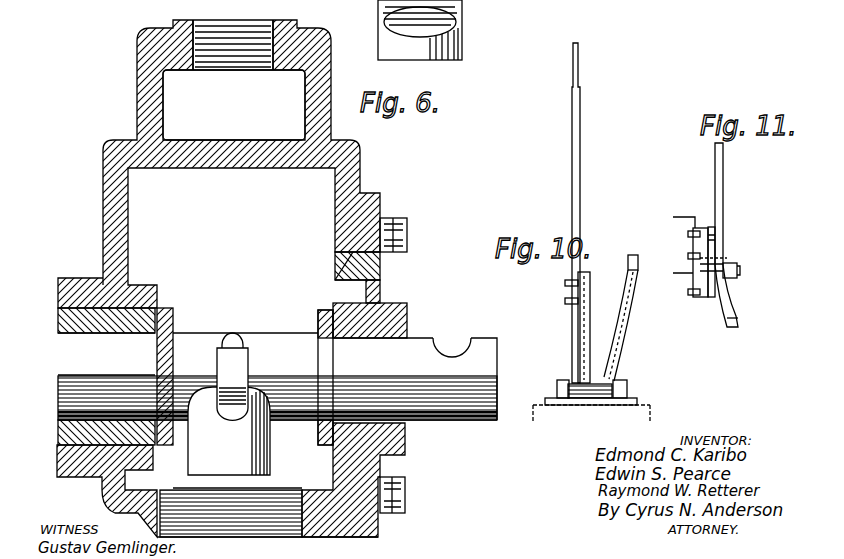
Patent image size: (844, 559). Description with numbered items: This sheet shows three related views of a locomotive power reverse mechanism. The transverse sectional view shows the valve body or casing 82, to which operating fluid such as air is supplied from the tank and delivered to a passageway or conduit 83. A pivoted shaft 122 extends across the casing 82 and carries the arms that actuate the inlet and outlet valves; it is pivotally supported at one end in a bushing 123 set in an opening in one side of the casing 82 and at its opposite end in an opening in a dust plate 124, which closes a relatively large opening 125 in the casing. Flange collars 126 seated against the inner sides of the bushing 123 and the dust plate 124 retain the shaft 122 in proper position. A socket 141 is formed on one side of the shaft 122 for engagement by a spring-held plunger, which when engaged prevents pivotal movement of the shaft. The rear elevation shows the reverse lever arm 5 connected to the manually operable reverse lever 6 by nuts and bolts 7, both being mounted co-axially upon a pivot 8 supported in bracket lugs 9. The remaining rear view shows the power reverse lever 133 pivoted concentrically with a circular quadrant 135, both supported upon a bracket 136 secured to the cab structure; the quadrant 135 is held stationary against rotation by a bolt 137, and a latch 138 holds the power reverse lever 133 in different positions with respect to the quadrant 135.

In FIG. 6, the valve body or casing 82 is at (110, 202).
In FIG. 6, the passageway or conduit 83 is at (234, 105).
In FIG. 6, the pivoted shaft 122 is at (202, 345).
In FIG. 6, the bushing 123 is at (178, 270).
In FIG. 6, the dust plate 124 is at (385, 316).
In FIG. 6, the opening 125 is at (340, 250).
In FIG. 6, the flange collars 126 is at (160, 358).
In FIG. 6, the socket 141 is at (229, 404).
In FIG. 10, the reverse lever arm 5 is at (625, 324).
In FIG. 10, the reverse lever 6 is at (580, 186).
In FIG. 10, the nuts and bolts 7 is at (565, 301).
In FIG. 10, the pivot 8 is at (628, 389).
In FIG. 10, the bracket lugs 9 is at (560, 380).
In FIG. 11, the power reverse lever 133 is at (723, 200).
In FIG. 11, the circular quadrant 135 is at (716, 259).
In FIG. 11, the bracket 136 is at (700, 284).
In FIG. 11, the bolt 137 is at (700, 296).
In FIG. 11, the latch 138 is at (712, 227).